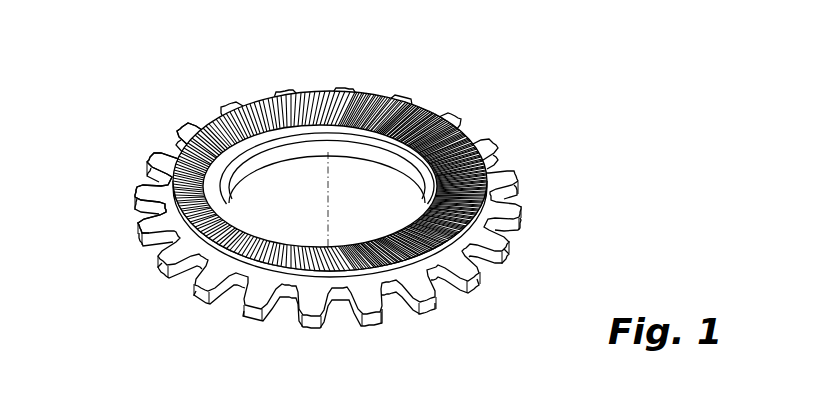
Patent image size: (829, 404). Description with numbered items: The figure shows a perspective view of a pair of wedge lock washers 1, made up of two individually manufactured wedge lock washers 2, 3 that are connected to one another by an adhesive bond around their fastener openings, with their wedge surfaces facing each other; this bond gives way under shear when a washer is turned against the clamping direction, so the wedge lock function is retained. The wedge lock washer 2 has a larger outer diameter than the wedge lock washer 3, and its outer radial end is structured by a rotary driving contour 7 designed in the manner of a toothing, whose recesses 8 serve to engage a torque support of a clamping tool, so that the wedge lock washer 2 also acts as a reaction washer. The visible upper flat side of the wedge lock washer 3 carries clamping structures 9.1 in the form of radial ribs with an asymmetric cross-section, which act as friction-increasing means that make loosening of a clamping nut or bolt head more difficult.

The pair of wedge lock washers 1 is at (538, 128).
The wedge lock washer 2 is at (366, 189).
The wedge lock washer 3 is at (330, 140).
The rotary driving contour 7 is at (160, 132).
The recesses 8 is at (145, 229).
The clamping structures 9.1 is at (268, 94).